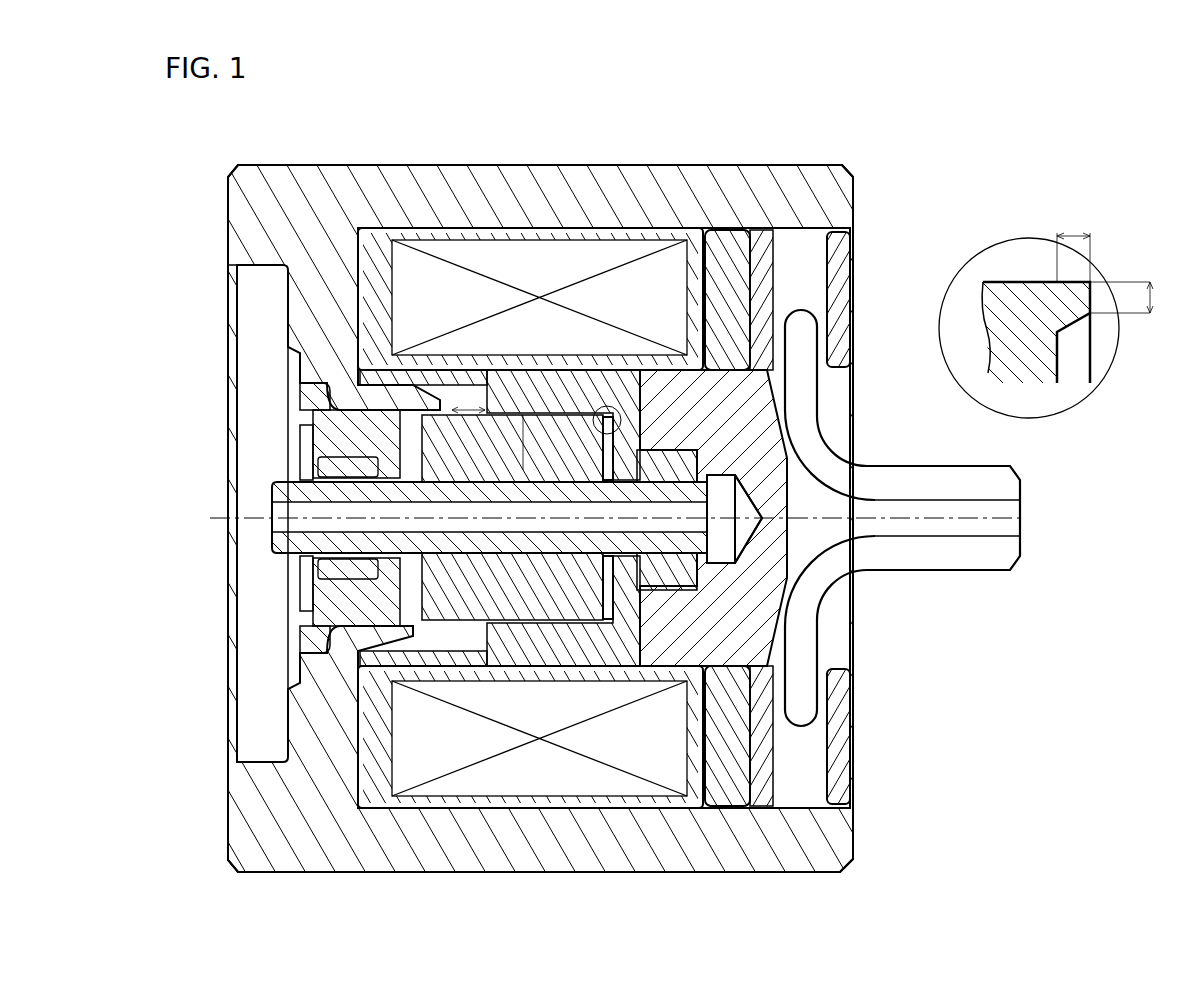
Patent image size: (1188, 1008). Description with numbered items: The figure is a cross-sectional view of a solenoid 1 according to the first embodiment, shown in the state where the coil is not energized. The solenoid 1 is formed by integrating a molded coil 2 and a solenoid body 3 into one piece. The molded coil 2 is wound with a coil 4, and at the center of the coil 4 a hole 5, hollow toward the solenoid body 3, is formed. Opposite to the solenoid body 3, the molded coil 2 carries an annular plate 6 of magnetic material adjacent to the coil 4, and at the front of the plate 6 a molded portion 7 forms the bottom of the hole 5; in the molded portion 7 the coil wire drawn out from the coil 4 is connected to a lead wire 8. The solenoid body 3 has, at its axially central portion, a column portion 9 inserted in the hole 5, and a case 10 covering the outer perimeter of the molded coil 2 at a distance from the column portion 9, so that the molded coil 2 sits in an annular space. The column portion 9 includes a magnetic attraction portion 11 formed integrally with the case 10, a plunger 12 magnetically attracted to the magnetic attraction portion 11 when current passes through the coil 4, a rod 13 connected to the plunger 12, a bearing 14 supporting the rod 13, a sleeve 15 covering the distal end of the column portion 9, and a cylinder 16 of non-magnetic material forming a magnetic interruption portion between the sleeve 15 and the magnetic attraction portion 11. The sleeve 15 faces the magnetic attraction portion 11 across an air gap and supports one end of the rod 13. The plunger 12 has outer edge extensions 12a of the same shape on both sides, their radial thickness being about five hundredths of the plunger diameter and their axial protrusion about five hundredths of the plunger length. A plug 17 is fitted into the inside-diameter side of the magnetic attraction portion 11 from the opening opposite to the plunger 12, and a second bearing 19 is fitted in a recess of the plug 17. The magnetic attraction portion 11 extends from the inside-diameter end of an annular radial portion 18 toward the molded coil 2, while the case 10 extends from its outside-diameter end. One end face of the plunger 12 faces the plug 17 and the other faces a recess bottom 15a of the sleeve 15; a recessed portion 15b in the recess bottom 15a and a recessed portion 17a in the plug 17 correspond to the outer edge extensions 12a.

The solenoid 1 is at (634, 143).
The molded coil 2 is at (855, 255).
The solenoid body 3 is at (283, 328).
The coil 4 is at (512, 250).
The hole 5 is at (688, 380).
The annular plate 6 is at (727, 237).
The molded portion 7 is at (855, 290).
The lead wire 8 is at (947, 486).
The column portion 9 is at (792, 552).
The case 10 is at (398, 190).
The magnetic attraction portion 11 is at (290, 185).
The plunger 12 is at (600, 618).
The outer edge extension 12a is at (1092, 300).
The rod 13 is at (276, 540).
The bearing 14 is at (700, 590).
The sleeve 15 is at (955, 530).
The recess bottom 15a is at (950, 497).
The recessed portion 15b is at (640, 632).
The cylinder 16 is at (462, 383).
The plug 17 is at (303, 397).
The recessed portion 17a is at (327, 427).
The annular radial portion 18 is at (287, 283).
The second bearing 19 is at (232, 518).